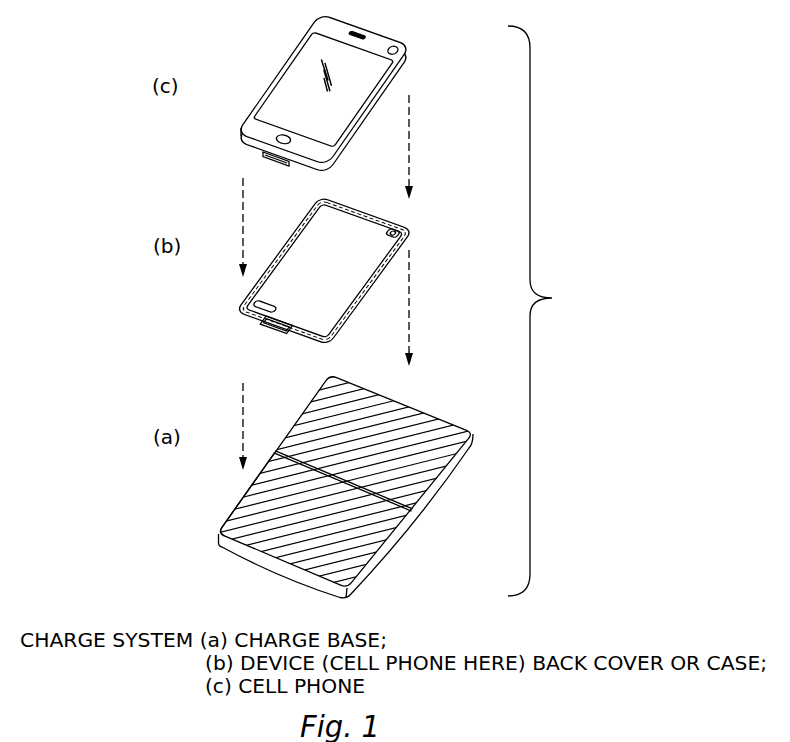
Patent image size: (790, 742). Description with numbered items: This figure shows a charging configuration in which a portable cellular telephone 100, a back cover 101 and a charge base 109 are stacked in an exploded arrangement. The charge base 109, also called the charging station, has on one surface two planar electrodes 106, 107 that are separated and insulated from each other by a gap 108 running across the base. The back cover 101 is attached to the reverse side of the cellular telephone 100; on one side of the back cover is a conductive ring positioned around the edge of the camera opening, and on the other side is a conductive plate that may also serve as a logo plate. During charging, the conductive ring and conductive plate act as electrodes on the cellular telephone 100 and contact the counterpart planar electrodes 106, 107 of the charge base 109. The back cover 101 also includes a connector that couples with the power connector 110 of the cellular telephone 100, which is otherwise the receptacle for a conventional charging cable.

The portable cellular telephone 100 is at (386, 42).
The power connector 110 is at (270, 158).
The back cover 101 is at (318, 272).
The planar electrode 106 is at (237, 504).
The planar electrode 107 is at (305, 408).
The gap 108 is at (416, 514).
The charge base 109 is at (278, 575).